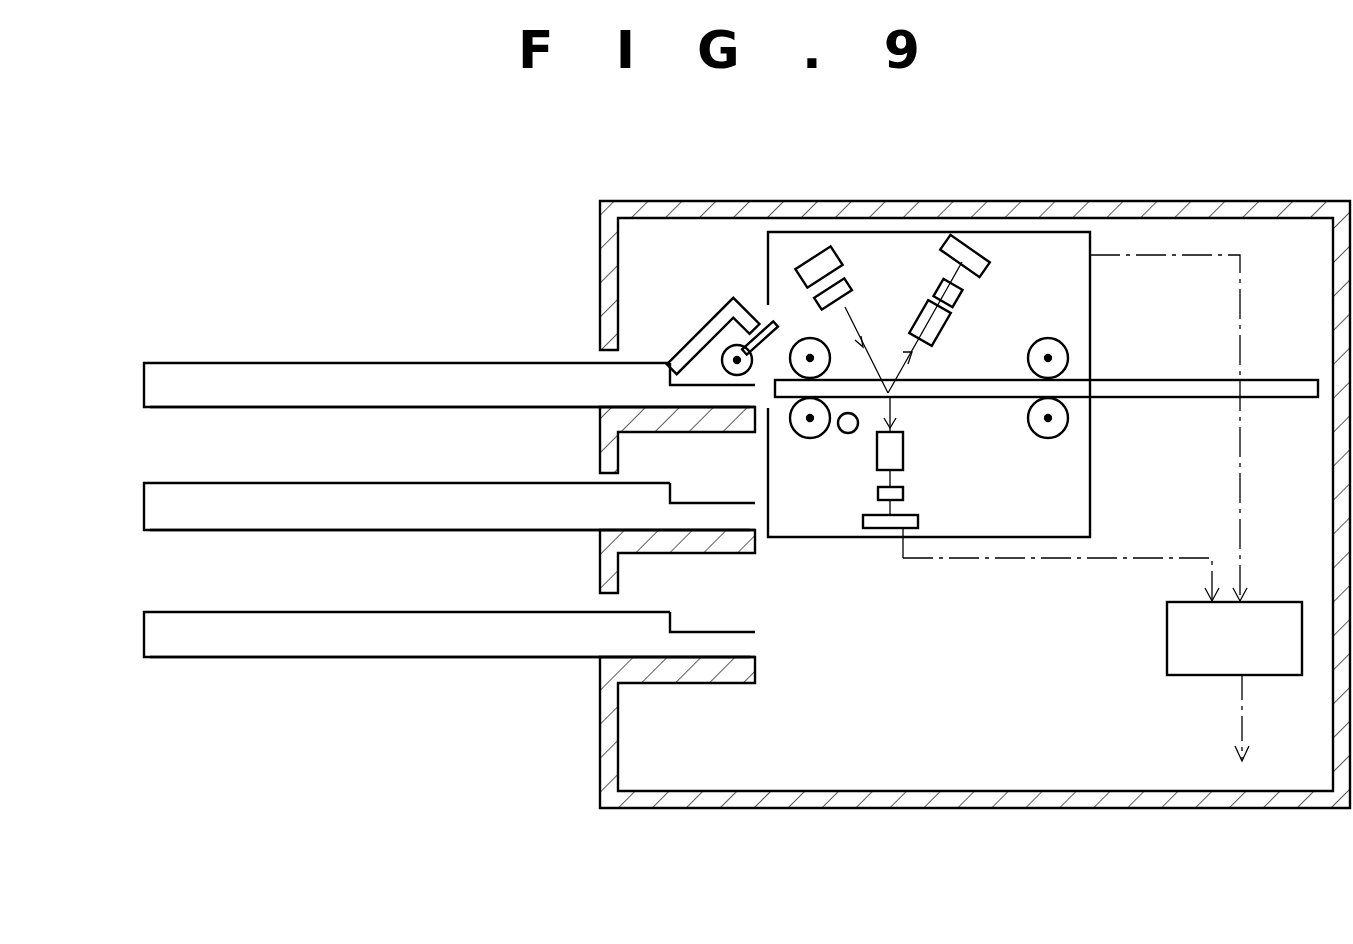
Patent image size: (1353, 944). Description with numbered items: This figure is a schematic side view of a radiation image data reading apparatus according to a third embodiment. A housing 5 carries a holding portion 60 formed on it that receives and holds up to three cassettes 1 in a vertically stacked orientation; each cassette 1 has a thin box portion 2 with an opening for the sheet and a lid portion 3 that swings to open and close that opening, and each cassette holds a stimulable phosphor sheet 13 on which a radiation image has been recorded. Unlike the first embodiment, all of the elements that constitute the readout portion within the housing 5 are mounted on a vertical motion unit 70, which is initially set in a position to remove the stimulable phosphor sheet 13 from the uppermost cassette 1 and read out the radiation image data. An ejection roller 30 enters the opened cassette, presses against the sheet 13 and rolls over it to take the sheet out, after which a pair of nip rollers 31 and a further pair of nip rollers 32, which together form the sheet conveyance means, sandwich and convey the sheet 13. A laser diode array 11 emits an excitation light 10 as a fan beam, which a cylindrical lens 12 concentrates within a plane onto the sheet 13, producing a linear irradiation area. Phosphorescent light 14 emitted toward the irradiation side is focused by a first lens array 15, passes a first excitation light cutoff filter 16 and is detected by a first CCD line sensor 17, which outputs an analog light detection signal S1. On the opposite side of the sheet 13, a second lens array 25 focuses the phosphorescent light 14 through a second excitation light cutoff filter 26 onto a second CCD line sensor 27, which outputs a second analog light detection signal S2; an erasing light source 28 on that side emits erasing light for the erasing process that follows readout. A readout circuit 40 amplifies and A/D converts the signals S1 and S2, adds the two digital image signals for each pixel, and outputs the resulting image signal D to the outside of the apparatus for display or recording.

The cassette 1 is at (202, 340).
The box portion 2 is at (372, 393).
The lid portion 3 is at (698, 342).
The housing 5 is at (598, 220).
The excitation light 10 is at (865, 345).
The laser diode array 11 is at (808, 270).
The cylindrical lens 12 is at (848, 283).
The stimulable phosphor sheet 13 is at (1278, 375).
The phosphorescent light 14 is at (930, 367).
The first lens array 15 is at (918, 322).
The first excitation light cutoff filter 16 is at (950, 283).
The first CCD line sensor 17 is at (967, 238).
The second lens array 25 is at (905, 452).
The second excitation light cutoff filter 26 is at (905, 493).
The second CCD line sensor 27 is at (872, 530).
The erasing light source 28 is at (847, 437).
The ejection roller 30 is at (737, 358).
The nip rollers 31 is at (806, 352).
The nip rollers 32 is at (1066, 366).
The readout circuit 40 is at (1234, 638).
The holding portion 60 is at (905, 472).
The vertical motion unit 70 is at (1093, 325).
The light detection signal S1 is at (1198, 253).
The light detection signal S2 is at (957, 562).
The image signal D is at (1257, 721).